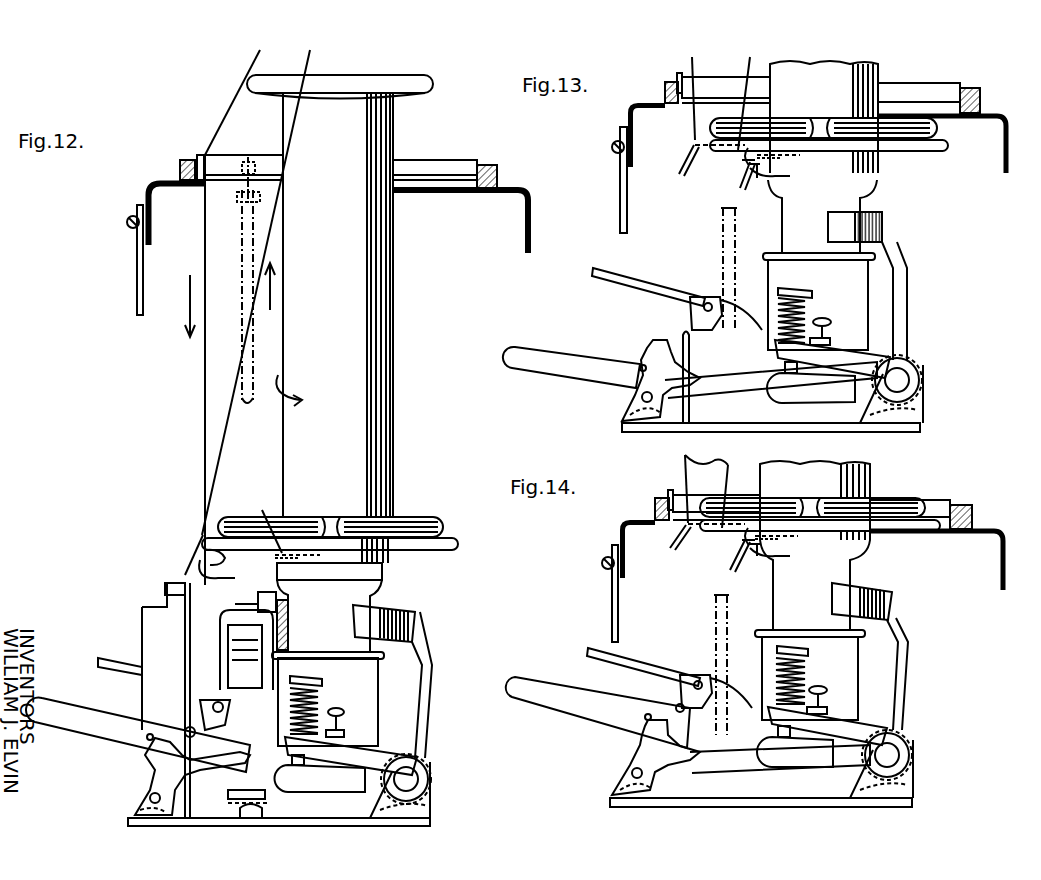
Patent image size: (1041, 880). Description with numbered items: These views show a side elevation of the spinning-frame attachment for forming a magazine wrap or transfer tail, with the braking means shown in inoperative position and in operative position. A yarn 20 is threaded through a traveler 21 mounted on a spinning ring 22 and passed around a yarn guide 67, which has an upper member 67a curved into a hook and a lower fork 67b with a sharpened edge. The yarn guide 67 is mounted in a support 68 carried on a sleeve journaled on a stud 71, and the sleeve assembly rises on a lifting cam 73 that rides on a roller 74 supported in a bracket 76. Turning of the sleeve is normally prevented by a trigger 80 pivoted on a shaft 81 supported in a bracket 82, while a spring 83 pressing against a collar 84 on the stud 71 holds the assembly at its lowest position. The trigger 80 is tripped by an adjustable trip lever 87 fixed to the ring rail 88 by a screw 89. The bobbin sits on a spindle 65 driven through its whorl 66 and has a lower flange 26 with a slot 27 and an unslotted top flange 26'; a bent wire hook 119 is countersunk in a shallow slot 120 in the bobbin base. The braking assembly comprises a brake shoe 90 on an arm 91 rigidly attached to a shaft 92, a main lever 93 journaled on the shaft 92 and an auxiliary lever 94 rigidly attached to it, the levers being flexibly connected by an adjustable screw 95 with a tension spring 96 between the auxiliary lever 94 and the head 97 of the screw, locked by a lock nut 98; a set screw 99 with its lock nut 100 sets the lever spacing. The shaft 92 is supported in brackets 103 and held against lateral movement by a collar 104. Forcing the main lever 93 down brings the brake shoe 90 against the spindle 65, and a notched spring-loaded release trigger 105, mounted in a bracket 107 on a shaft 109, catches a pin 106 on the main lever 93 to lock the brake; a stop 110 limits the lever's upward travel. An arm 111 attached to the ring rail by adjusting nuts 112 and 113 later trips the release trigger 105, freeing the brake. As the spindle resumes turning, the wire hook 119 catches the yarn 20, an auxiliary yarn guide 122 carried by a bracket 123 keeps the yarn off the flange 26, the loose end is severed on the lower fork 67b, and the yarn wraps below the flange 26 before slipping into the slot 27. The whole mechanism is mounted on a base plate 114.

In FIG. 12, the yarn 20 is at (205, 368).
In FIG. 13, the yarn 20 is at (691, 118).
In FIG. 14, the yarn 20 is at (698, 470).
In FIG. 12, the traveler 21 is at (199, 155).
In FIG. 13, the traveler 21 is at (677, 78).
In FIG. 14, the traveler 21 is at (669, 495).
In FIG. 12, the spinning ring 22 is at (230, 162).
In FIG. 13, the spinning ring 22 is at (716, 86).
In FIG. 14, the spinning ring 22 is at (703, 502).
In FIG. 12, the flange 26 is at (330, 509).
In FIG. 13, the flange 26 is at (842, 130).
In FIG. 14, the flange 26 is at (812, 488).
In FIG. 12, the top flange 26' is at (340, 73).
In FIG. 12, the slot 27 is at (330, 517).
In FIG. 13, the slot 27 is at (822, 126).
In FIG. 14, the slot 27 is at (810, 498).
In FIG. 12, the spindle 65 is at (380, 583).
In FIG. 13, the spindle 65 is at (872, 188).
In FIG. 14, the spindle 65 is at (856, 567).
In FIG. 12, the whorl 66 is at (370, 673).
In FIG. 13, the whorl 66 is at (860, 283).
In FIG. 14, the whorl 66 is at (858, 654).
In FIG. 12, the yarn guide 67 is at (165, 590).
In FIG. 13, the yarn guide 67 is at (741, 176).
In FIG. 14, the yarn guide 67 is at (741, 560).
In FIG. 12, the upper member 67a is at (214, 557).
In FIG. 13, the upper member 67a is at (768, 150).
In FIG. 14, the upper member 67a is at (768, 534).
In FIG. 12, the lower fork 67b is at (234, 572).
In FIG. 13, the lower fork 67b is at (792, 176).
In FIG. 14, the lower fork 67b is at (776, 558).
In FIG. 12, the support 68 is at (228, 647).
In FIG. 12, the stud 71 is at (268, 592).
In FIG. 12, the lifting cam 73 is at (246, 783).
In FIG. 12, the roller 74 is at (249, 795).
In FIG. 12, the bracket 76 is at (246, 811).
In FIG. 12, the trigger 80 is at (116, 660).
In FIG. 13, the trigger 80 is at (642, 283).
In FIG. 14, the trigger 80 is at (644, 658).
In FIG. 12, the shaft 81 is at (216, 702).
In FIG. 13, the shaft 81 is at (704, 307).
In FIG. 14, the shaft 81 is at (694, 685).
In FIG. 12, the bracket 82 is at (200, 715).
In FIG. 13, the bracket 82 is at (694, 318).
In FIG. 14, the bracket 82 is at (684, 697).
In FIG. 12, the spring 83 is at (290, 625).
In FIG. 12, the collar 84 is at (235, 600).
In FIG. 12, the trip lever 87 is at (137, 270).
In FIG. 13, the trip lever 87 is at (620, 185).
In FIG. 14, the trip lever 87 is at (612, 600).
In FIG. 12, the ring rail 88 is at (146, 190).
In FIG. 13, the ring rail 88 is at (628, 115).
In FIG. 14, the ring rail 88 is at (620, 530).
In FIG. 12, the screw 89 is at (128, 226).
In FIG. 13, the screw 89 is at (614, 150).
In FIG. 14, the screw 89 is at (604, 566).
In FIG. 12, the brake shoe 90 is at (400, 615).
In FIG. 13, the brake shoe 90 is at (866, 220).
In FIG. 14, the brake shoe 90 is at (878, 596).
In FIG. 12, the arm 91 is at (428, 674).
In FIG. 13, the arm 91 is at (907, 293).
In FIG. 14, the arm 91 is at (906, 648).
In FIG. 12, the shaft 92 is at (418, 779).
In FIG. 13, the shaft 92 is at (909, 381).
In FIG. 14, the shaft 92 is at (899, 756).
In FIG. 12, the main lever 93 is at (75, 745).
In FIG. 13, the main lever 93 is at (556, 368).
In FIG. 14, the main lever 93 is at (570, 725).
In FIG. 12, the auxiliary lever 94 is at (385, 755).
In FIG. 13, the auxiliary lever 94 is at (872, 355).
In FIG. 14, the auxiliary lever 94 is at (866, 730).
In FIG. 12, the adjustable screw 95 is at (318, 697).
In FIG. 13, the adjustable screw 95 is at (800, 295).
In FIG. 14, the adjustable screw 95 is at (778, 720).
In FIG. 12, the tension spring 96 is at (318, 710).
In FIG. 13, the tension spring 96 is at (803, 309).
In FIG. 14, the tension spring 96 is at (805, 683).
In FIG. 12, the head 97 is at (322, 679).
In FIG. 13, the head 97 is at (792, 288).
In FIG. 14, the head 97 is at (796, 646).
In FIG. 12, the lock nut 98 is at (298, 770).
In FIG. 13, the lock nut 98 is at (790, 382).
In FIG. 14, the lock nut 98 is at (780, 755).
In FIG. 12, the set screw 99 is at (342, 716).
In FIG. 13, the set screw 99 is at (833, 317).
In FIG. 14, the set screw 99 is at (826, 690).
In FIG. 12, the lock nut 100 is at (344, 737).
In FIG. 13, the lock nut 100 is at (830, 342).
In FIG. 14, the lock nut 100 is at (827, 711).
In FIG. 12, the brackets 103 is at (415, 806).
In FIG. 13, the brackets 103 is at (905, 410).
In FIG. 14, the brackets 103 is at (895, 785).
In FIG. 12, the collar 104 is at (425, 766).
In FIG. 13, the collar 104 is at (915, 366).
In FIG. 14, the collar 104 is at (905, 741).
In FIG. 12, the release trigger 105 is at (150, 758).
In FIG. 13, the release trigger 105 is at (652, 345).
In FIG. 14, the release trigger 105 is at (650, 752).
In FIG. 12, the pin 106 is at (147, 736).
In FIG. 13, the pin 106 is at (639, 369).
In FIG. 14, the pin 106 is at (644, 717).
In FIG. 12, the bracket 107 is at (140, 808).
In FIG. 13, the bracket 107 is at (632, 412).
In FIG. 14, the bracket 107 is at (622, 787).
In FIG. 12, the shaft 109 is at (150, 797).
In FIG. 13, the shaft 109 is at (642, 397).
In FIG. 14, the shaft 109 is at (632, 773).
In FIG. 12, the stop 110 is at (186, 728).
In FIG. 13, the stop 110 is at (690, 346).
In FIG. 14, the stop 110 is at (676, 706).
In FIG. 12, the arm 111 is at (251, 317).
In FIG. 13, the arm 111 is at (724, 250).
In FIG. 14, the arm 111 is at (715, 622).
In FIG. 12, the adjusting nut 112 is at (256, 168).
In FIG. 12, the adjusting nut 113 is at (237, 202).
In FIG. 12, the base plate 114 is at (430, 823).
In FIG. 13, the base plate 114 is at (920, 428).
In FIG. 14, the base plate 114 is at (912, 803).
In FIG. 12, the wire hook 119 is at (259, 520).
In FIG. 13, the wire hook 119 is at (767, 186).
In FIG. 14, the wire hook 119 is at (741, 542).
In FIG. 12, the slot 120 is at (317, 555).
In FIG. 13, the slot 120 is at (800, 155).
In FIG. 14, the slot 120 is at (799, 545).
In FIG. 12, the auxiliary yarn guide 122 is at (452, 542).
In FIG. 13, the auxiliary yarn guide 122 is at (908, 148).
In FIG. 14, the auxiliary yarn guide 122 is at (916, 531).
In FIG. 12, the bracket 123 is at (142, 620).